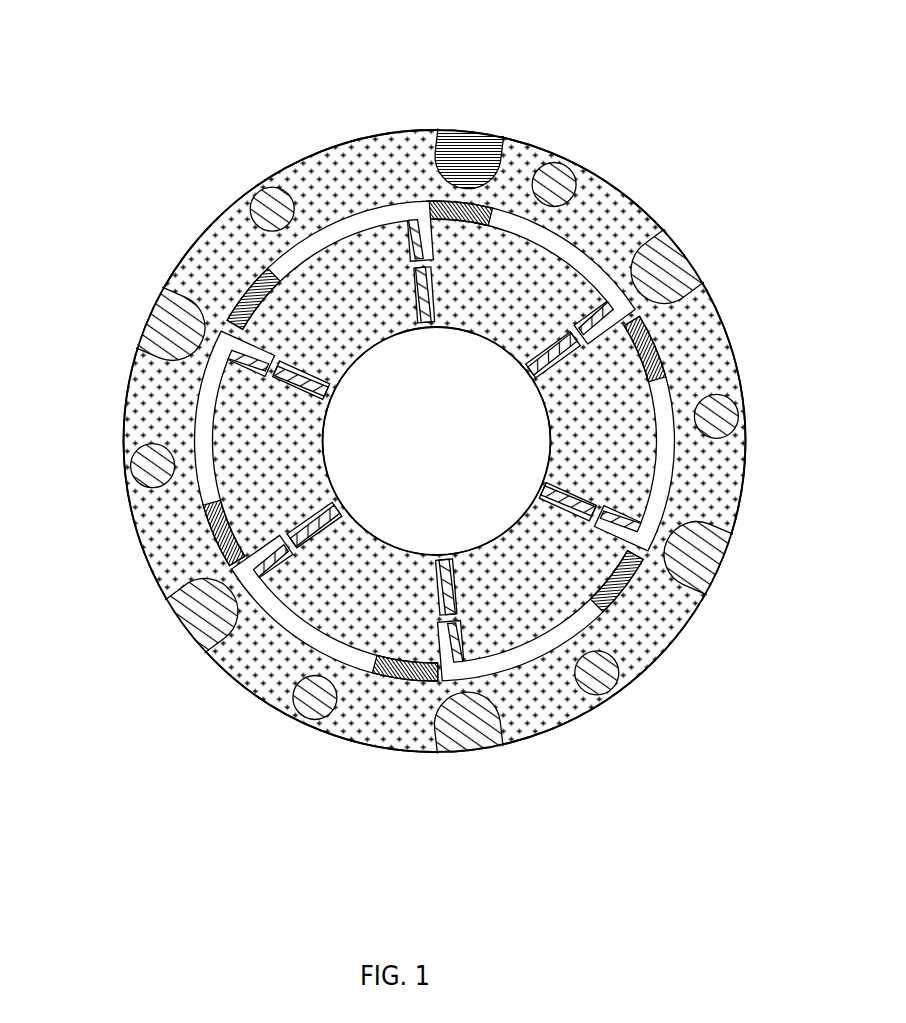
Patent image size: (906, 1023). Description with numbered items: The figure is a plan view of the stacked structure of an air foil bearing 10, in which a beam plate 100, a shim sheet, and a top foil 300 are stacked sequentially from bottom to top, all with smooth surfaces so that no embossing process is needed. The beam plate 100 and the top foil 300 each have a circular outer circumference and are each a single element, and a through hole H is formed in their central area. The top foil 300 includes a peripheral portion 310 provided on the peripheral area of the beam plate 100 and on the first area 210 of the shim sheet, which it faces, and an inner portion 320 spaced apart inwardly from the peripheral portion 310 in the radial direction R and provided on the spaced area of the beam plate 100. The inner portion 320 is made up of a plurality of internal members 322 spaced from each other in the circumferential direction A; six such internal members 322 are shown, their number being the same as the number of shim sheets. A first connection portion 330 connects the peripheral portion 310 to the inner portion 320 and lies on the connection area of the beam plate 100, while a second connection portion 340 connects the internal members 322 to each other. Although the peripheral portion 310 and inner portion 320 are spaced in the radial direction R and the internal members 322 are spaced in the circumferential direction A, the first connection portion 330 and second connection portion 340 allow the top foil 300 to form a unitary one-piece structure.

The air foil bearing 10 is at (185, 48).
The beam plate 100 is at (477, 752).
The first area 210 is at (468, 158).
The top foil 300 is at (297, 720).
The peripheral portion 310 is at (353, 705).
The inner portion 320 is at (660, 795).
The internal member 322 is at (520, 596).
The first connection portion 330 is at (252, 653).
The second connection portion 340 is at (448, 693).
The through hole H is at (462, 396).
The radial direction R is at (434, 441).
The circumferential direction A is at (122, 253).